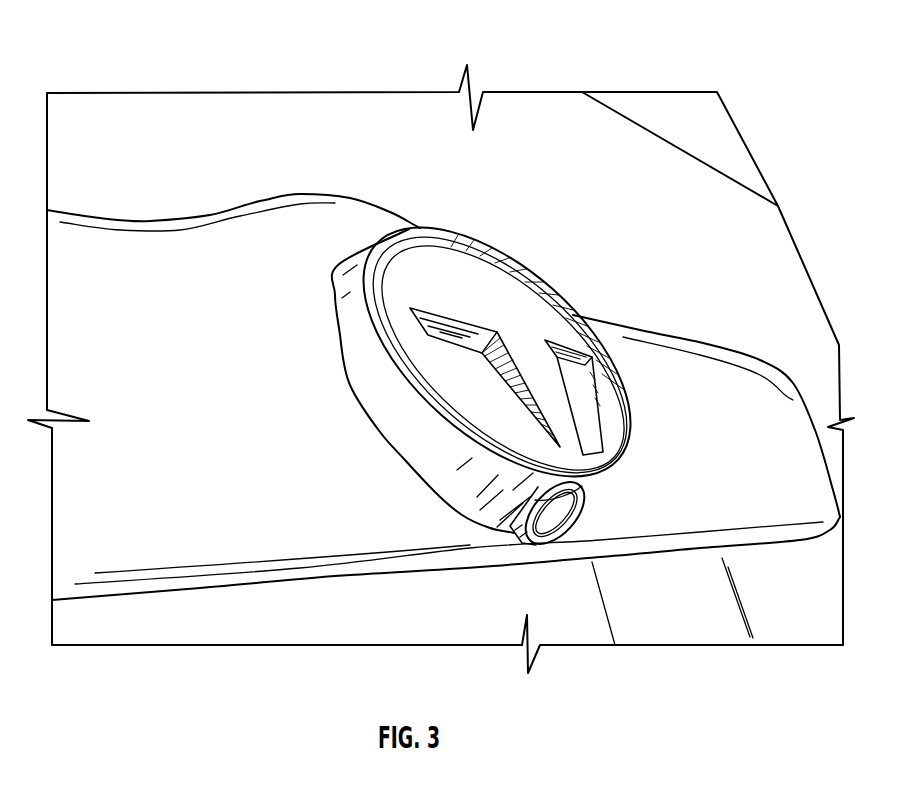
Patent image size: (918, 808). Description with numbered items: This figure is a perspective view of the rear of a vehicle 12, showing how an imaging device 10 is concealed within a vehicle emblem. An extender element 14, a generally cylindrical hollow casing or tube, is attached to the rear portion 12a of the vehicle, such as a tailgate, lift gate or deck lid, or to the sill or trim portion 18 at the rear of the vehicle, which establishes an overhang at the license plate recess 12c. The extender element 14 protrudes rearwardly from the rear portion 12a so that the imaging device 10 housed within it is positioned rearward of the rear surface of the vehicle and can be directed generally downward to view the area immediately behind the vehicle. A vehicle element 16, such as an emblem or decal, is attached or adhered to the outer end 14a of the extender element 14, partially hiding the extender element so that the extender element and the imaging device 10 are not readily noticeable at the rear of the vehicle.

The vehicle 12 is at (228, 92).
The rear portion 12a is at (522, 133).
The license plate recess 12c is at (697, 616).
The trim portion 18 is at (196, 407).
The extender element 14 is at (423, 455).
The outer end 14a is at (593, 413).
The vehicle element 16 is at (578, 312).
The imaging device 10 is at (573, 523).